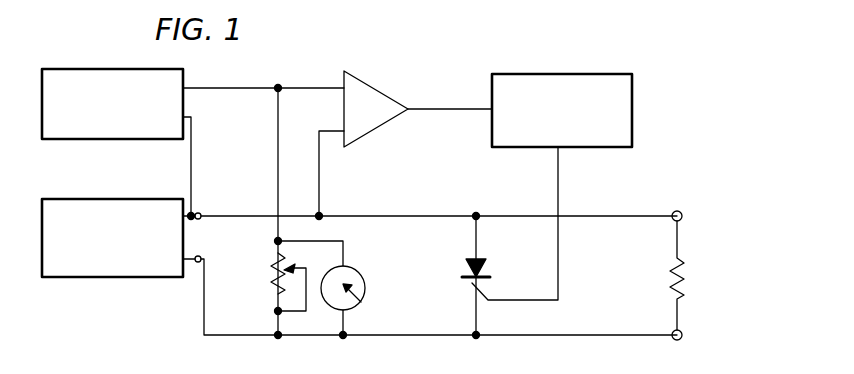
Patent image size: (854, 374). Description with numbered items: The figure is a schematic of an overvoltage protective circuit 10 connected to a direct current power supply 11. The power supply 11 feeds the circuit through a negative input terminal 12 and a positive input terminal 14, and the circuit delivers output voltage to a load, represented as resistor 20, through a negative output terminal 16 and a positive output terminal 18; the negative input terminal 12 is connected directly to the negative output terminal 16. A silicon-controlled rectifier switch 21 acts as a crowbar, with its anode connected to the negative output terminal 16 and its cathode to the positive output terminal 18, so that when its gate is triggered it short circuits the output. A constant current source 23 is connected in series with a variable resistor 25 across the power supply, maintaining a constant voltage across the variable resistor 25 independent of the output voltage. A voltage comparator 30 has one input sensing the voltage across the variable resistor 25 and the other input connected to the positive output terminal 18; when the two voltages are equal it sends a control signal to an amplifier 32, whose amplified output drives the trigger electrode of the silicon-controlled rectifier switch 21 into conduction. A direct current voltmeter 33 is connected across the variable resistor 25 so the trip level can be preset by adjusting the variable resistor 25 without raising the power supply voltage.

The overvoltage protective circuit 10 is at (430, 86).
The direct current power supply 11 is at (137, 199).
The negative input terminal 12 is at (200, 256).
The positive input terminal 14 is at (199, 213).
The negative output terminal 16 is at (683, 335).
The positive output terminal 18 is at (683, 214).
The resistor 20 is at (683, 272).
The silicon-controlled rectifier switch 21 is at (488, 270).
The constant current source 23 is at (90, 140).
The variable resistor 25 is at (275, 285).
The voltage comparator 30 is at (368, 133).
The amplifier 32 is at (549, 74).
The direct current voltmeter 33 is at (362, 272).